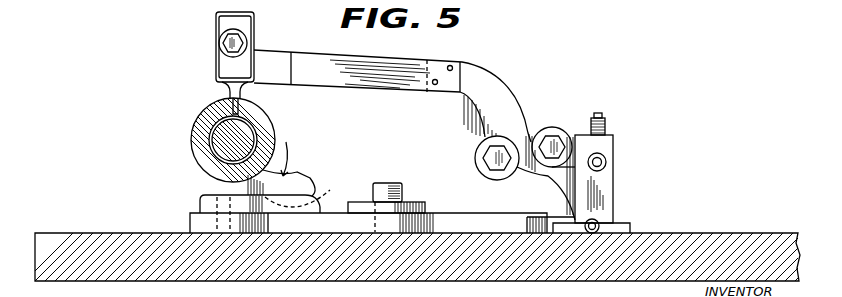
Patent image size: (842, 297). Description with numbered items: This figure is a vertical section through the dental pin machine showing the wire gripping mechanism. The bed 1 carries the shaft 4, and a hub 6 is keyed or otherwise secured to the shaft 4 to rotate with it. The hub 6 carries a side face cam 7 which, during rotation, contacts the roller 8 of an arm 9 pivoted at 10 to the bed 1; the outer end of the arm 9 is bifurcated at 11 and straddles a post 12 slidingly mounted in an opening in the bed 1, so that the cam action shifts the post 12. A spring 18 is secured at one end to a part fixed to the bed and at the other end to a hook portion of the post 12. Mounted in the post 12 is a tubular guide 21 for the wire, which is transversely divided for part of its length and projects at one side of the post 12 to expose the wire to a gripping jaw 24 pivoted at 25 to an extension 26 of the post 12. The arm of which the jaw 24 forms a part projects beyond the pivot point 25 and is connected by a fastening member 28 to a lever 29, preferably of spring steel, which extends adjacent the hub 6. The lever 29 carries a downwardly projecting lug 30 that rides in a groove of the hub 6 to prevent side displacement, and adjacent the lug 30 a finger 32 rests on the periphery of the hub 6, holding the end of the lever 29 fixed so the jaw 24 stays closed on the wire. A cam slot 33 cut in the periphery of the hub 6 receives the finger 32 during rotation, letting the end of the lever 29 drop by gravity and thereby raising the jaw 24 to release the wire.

The bed 1 is at (737, 240).
The shaft 4 is at (215, 144).
The hub 6 is at (268, 127).
The side face cam 7 is at (298, 182).
The roller 8 is at (190, 219).
The arm 9 is at (459, 220).
The pivot 10 is at (382, 190).
The bifurcated end of arm 11 is at (561, 218).
The post 12 is at (608, 184).
The spring 18 is at (600, 224).
The tubular guide 21 is at (607, 161).
The gripping jaw 24 is at (604, 130).
The pivot point 25 is at (549, 138).
The extension of post 26 is at (566, 170).
The fastening member 28 is at (490, 158).
The lever 29 is at (377, 75).
The lug 30 is at (242, 104).
The finger 32 is at (226, 88).
The cam slot 33 is at (194, 118).